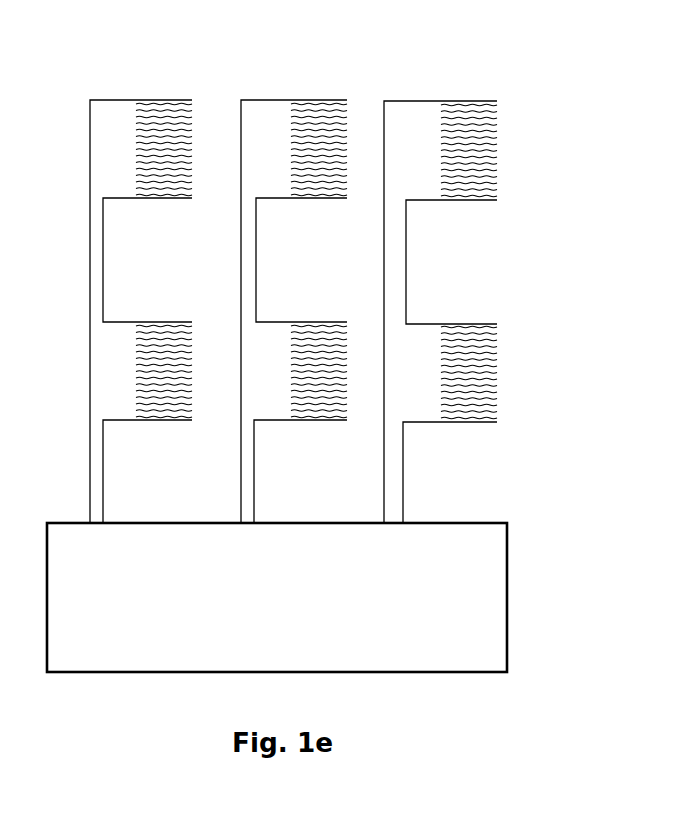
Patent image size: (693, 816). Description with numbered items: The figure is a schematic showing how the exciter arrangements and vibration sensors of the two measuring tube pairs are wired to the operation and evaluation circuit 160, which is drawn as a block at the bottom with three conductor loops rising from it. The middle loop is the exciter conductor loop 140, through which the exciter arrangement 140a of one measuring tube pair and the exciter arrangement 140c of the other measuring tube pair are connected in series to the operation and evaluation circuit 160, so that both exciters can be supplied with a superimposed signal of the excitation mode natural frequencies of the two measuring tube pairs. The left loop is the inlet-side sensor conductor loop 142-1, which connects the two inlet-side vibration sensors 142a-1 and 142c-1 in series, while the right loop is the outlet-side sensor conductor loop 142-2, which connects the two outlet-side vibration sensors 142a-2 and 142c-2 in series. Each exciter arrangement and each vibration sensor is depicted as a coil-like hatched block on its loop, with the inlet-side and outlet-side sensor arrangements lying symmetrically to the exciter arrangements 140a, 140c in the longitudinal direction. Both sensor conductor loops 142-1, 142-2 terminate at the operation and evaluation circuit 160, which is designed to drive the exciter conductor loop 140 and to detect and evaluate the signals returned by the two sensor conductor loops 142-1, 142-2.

The exciter conductor loop 140 is at (241, 488).
The exciter arrangement 140a is at (347, 122).
The exciter arrangement 140c is at (347, 335).
The inlet-side sensor conductor loop 142-1 is at (90, 280).
The inlet-side vibration sensor 142a-1 is at (191, 106).
The inlet-side vibration sensor 142c-1 is at (195, 323).
The outlet-side sensor conductor loop 142-2 is at (384, 280).
The outlet-side vibration sensor 142a-2 is at (503, 158).
The outlet-side vibration sensor 142c-2 is at (503, 380).
The operation and evaluation circuit 160 is at (509, 615).